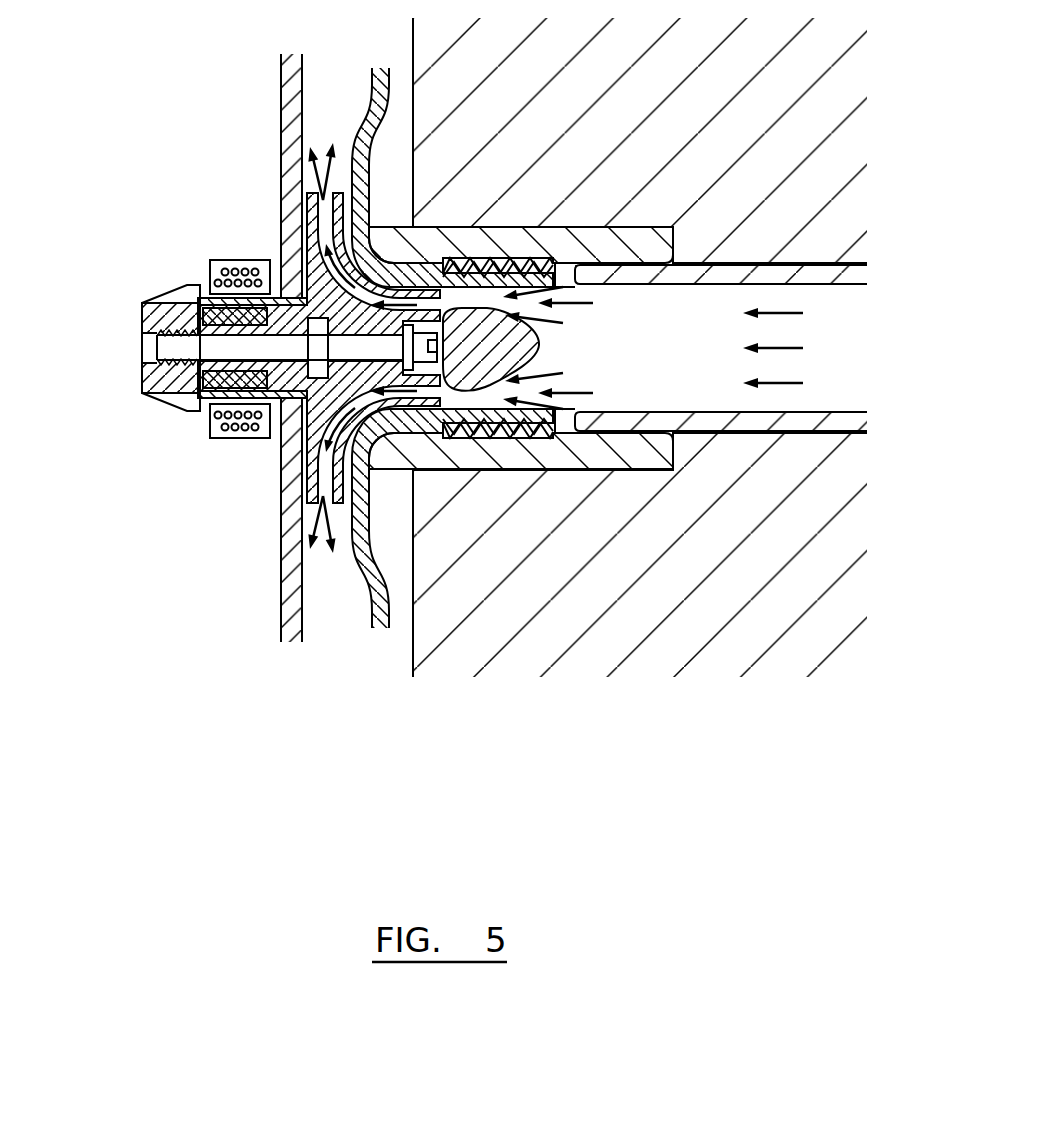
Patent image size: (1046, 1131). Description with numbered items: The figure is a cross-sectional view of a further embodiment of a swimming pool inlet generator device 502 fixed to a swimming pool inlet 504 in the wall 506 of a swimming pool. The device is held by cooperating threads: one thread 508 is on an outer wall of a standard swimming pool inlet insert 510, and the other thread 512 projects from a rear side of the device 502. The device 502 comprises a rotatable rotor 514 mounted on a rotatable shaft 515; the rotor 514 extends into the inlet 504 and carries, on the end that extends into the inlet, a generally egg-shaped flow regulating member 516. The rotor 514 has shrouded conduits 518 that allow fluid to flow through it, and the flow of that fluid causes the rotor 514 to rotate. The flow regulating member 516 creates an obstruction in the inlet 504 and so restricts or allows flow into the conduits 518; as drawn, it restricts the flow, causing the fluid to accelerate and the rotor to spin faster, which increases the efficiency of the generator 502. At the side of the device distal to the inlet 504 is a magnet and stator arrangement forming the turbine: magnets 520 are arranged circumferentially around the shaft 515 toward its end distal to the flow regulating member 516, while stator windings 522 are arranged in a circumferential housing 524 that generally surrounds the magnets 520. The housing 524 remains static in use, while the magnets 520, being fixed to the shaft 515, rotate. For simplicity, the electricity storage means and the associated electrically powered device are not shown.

The swimming pool inlet generator device 502 is at (232, 352).
The swimming pool inlet 504 is at (716, 364).
The wall of a swimming pool 506 is at (676, 583).
The thread 508 is at (522, 256).
The standard swimming pool inlet insert 510 is at (594, 240).
The thread 512 is at (462, 258).
The rotatable rotor 514 is at (322, 282).
The rotatable shaft 515 is at (142, 303).
The flow regulating member 516 is at (500, 353).
The shrouded conduits 518 is at (327, 215).
The magnets 520 is at (190, 290).
The stator windings 522 is at (240, 260).
The circumferential housing 524 is at (155, 347).